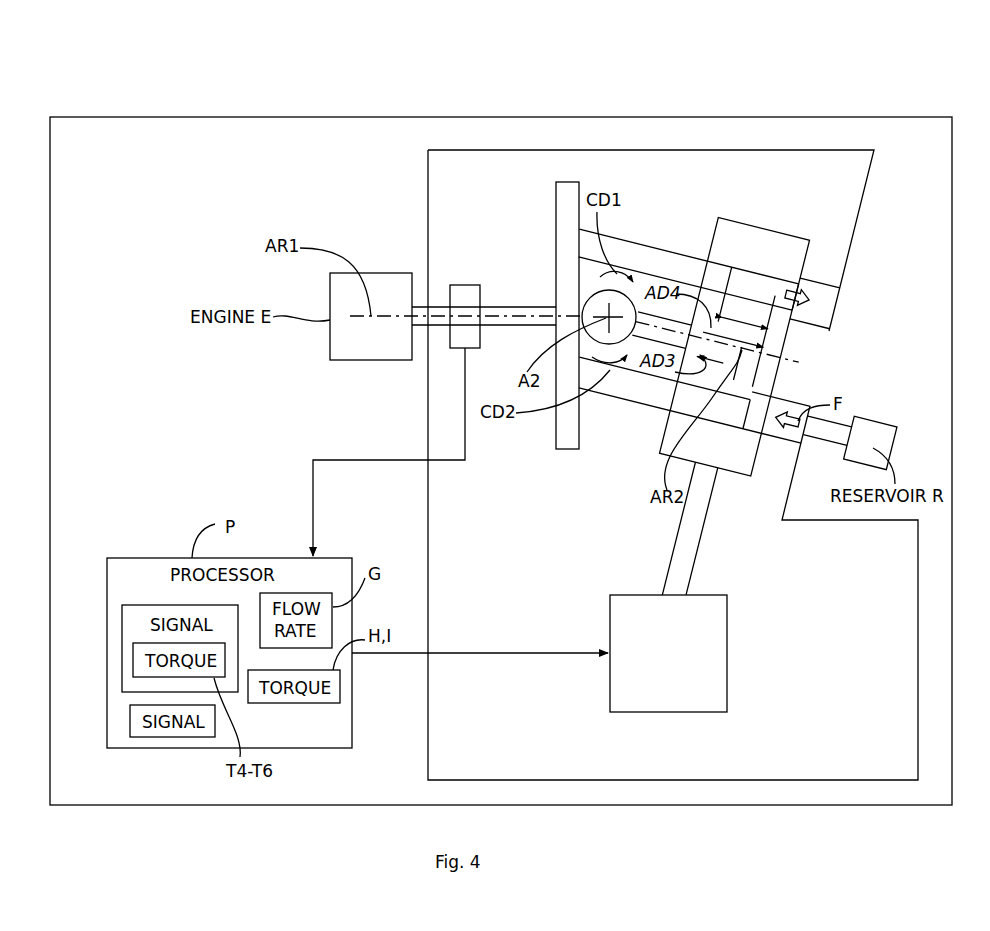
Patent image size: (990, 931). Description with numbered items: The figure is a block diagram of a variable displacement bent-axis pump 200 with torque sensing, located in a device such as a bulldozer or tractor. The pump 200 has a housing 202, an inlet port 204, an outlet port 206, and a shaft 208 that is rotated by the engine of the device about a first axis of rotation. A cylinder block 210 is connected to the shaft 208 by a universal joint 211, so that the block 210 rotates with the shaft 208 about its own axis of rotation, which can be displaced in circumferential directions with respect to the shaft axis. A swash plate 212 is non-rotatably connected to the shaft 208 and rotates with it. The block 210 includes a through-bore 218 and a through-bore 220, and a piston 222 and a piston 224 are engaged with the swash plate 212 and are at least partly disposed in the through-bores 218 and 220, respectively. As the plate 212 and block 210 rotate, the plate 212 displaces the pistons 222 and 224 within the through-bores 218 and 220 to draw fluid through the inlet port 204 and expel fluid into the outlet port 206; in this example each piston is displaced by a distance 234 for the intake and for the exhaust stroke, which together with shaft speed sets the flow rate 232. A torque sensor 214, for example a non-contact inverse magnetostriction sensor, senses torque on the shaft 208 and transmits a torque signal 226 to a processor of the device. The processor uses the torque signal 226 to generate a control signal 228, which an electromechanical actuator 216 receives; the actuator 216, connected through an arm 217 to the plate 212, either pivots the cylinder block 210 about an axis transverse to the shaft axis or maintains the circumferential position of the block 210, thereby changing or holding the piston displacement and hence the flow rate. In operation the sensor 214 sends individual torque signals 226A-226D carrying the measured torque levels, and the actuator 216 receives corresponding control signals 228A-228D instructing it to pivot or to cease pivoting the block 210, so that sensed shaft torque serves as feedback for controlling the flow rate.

The variable displacement bent-axis pump 200 is at (620, 138).
The housing 202 is at (678, 150).
The inlet port 204 is at (785, 452).
The outlet port 206 is at (832, 306).
The shaft 208 is at (500, 327).
The cylinder block 210 is at (752, 222).
The universal joint 211 is at (594, 288).
The swash plate 212 is at (565, 180).
The torque sensor 214 is at (465, 284).
The electromechanical actuator 216 is at (686, 664).
The arm 217 is at (668, 565).
The through-bore 218 is at (762, 397).
The through-bore 220 is at (778, 298).
The piston 222 is at (642, 402).
The piston 224 is at (626, 238).
The torque signal 226 is at (395, 468).
The control signal 228 is at (522, 656).
The flow rate 232 is at (798, 284).
The distance 234 is at (748, 320).
The torque signals 226A-226D is at (138, 605).
The control signals 228A-228D is at (149, 738).